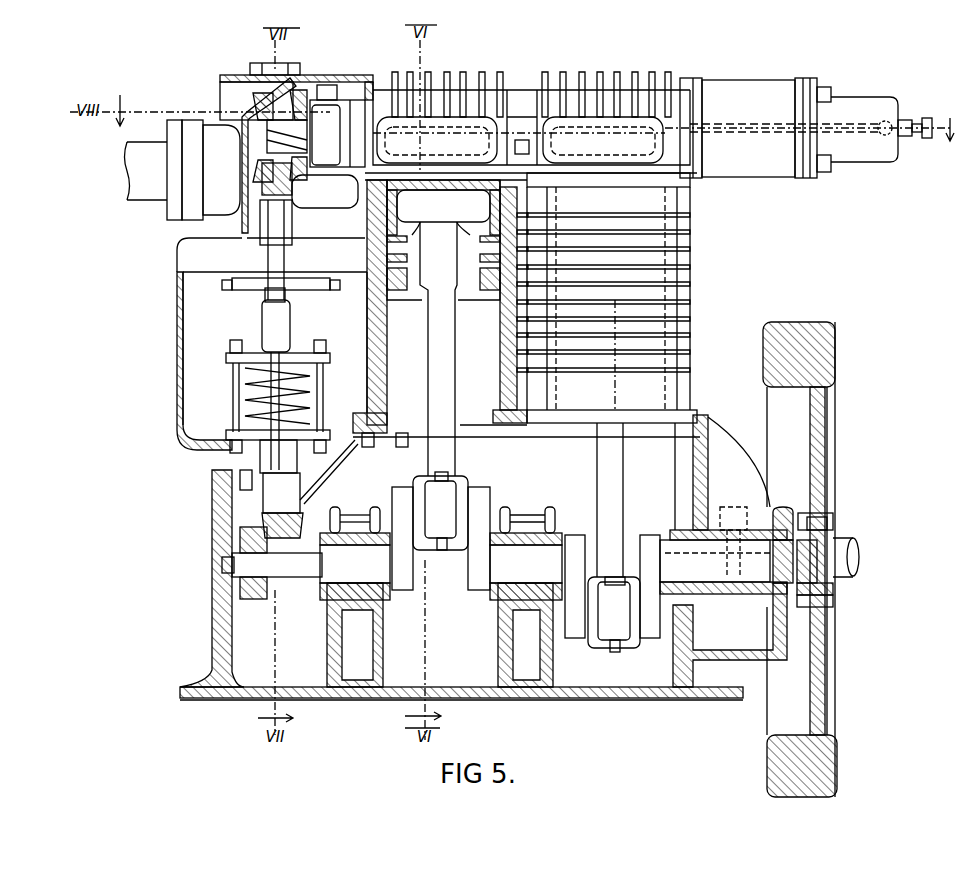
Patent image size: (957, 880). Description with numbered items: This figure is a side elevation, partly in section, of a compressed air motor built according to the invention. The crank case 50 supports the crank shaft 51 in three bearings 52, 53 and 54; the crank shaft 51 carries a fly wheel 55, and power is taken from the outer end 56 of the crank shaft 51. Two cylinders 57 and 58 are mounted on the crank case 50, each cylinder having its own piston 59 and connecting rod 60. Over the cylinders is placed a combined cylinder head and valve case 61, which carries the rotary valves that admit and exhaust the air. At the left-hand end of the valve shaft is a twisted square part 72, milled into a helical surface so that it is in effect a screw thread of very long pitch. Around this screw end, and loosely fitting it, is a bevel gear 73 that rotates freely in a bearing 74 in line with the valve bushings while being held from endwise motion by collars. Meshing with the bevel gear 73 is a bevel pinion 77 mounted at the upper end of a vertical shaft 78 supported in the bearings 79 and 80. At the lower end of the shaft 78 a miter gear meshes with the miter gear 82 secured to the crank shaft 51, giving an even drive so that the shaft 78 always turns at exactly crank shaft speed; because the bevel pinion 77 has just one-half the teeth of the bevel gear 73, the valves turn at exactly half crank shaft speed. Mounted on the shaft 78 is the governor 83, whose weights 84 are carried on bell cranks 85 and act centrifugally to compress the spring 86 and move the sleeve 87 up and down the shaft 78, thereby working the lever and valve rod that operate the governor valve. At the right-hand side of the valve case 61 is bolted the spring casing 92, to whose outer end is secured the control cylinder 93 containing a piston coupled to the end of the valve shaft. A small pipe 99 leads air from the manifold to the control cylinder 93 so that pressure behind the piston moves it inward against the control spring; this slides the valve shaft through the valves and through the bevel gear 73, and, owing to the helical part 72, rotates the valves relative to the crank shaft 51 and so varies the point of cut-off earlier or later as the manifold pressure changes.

The crank case 50 is at (453, 686).
The crank shaft 51 is at (478, 577).
The bearing 52 is at (348, 585).
The bearing 53 is at (523, 585).
The bearing 54 is at (684, 584).
The fly wheel 55 is at (822, 358).
The outer end of the crank shaft 56 is at (845, 561).
The cylinder 57 is at (503, 400).
The cylinder 58 is at (612, 298).
The piston 59 is at (403, 208).
The connecting rod 60 is at (433, 363).
The combined cylinder head and valve case 61 is at (452, 100).
The twisted square part of the valve shaft 72 is at (272, 117).
The bevel gear 73 is at (273, 130).
The bearing 74 is at (337, 152).
The bevel pinion 77 is at (257, 167).
The shaft 78 is at (262, 250).
The bearing 79 is at (292, 233).
The bearing 80 is at (296, 490).
The miter gear 82 is at (260, 585).
The governor 83 is at (262, 358).
The weights 84 is at (276, 326).
The bell cranks 85 is at (290, 392).
The spring 86 is at (257, 387).
The sleeve 87 is at (290, 298).
The spring casing 92 is at (742, 102).
The control cylinder 93 is at (860, 115).
The small pipe 99 is at (730, 133).